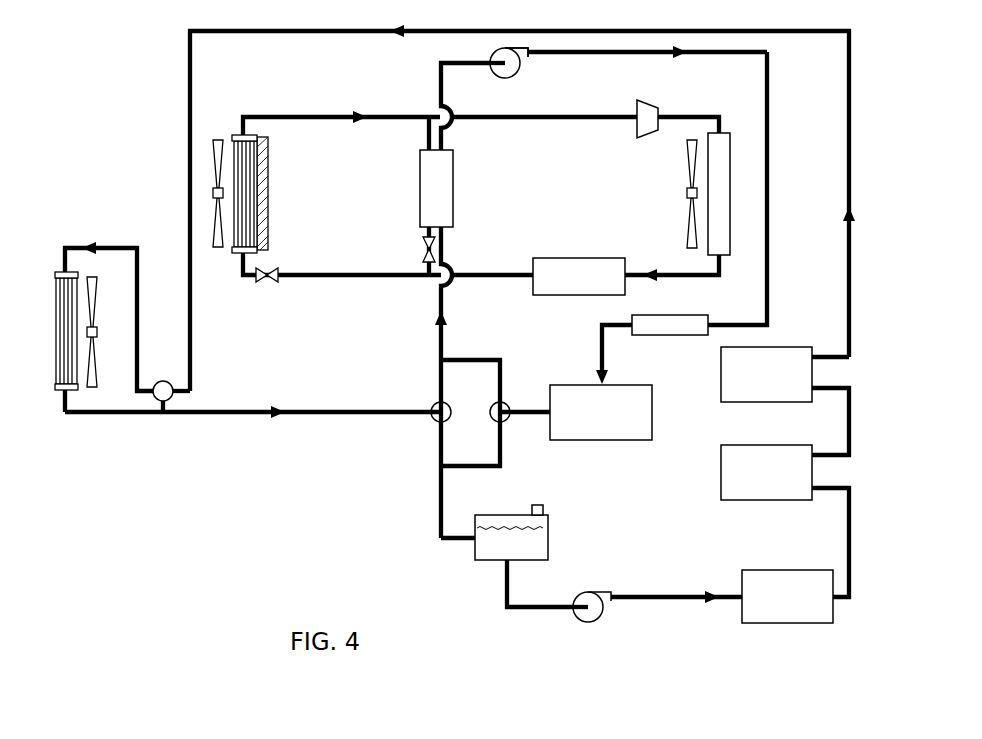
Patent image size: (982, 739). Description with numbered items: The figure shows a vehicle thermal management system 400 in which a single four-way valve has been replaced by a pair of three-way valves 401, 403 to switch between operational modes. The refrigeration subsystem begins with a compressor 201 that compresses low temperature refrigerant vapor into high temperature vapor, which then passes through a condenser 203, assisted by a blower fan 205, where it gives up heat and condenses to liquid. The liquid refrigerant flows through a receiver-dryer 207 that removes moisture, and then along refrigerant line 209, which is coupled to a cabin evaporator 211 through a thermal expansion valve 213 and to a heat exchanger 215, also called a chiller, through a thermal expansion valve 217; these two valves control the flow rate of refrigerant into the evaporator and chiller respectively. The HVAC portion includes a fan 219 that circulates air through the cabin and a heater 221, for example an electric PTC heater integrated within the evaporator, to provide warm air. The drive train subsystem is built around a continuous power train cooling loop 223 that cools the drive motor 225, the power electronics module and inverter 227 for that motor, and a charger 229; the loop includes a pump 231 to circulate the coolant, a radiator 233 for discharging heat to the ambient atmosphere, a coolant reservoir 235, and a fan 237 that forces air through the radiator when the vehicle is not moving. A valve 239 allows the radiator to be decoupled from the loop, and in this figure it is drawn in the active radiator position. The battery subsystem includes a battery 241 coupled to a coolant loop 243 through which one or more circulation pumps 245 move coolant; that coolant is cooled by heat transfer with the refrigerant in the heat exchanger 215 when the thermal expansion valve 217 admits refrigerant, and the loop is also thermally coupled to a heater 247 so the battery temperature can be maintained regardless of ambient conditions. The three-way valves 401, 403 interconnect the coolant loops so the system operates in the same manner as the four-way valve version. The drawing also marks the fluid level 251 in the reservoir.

The system 400 is at (270, 511).
The compressor 201 is at (653, 108).
The condenser 203 is at (728, 135).
The blower fan 205 is at (688, 148).
The receiver-dryer 207 is at (606, 258).
The refrigerant line 209 is at (470, 274).
The cabin evaporator 211 is at (255, 183).
The thermal expansion valve 213 is at (274, 284).
The heat exchanger 215 is at (448, 183).
The thermal expansion valve 217 is at (425, 252).
The fan 219 is at (212, 243).
The heater 221 is at (272, 142).
The power train cooling loop 223 is at (447, 31).
The drive motor 225 is at (736, 445).
The power electronics module and inverter 227 is at (778, 347).
The charger 229 is at (758, 570).
The pump 231 is at (583, 593).
The radiator 233 is at (56, 352).
The coolant reservoir 235 is at (549, 556).
The fan 237 is at (96, 282).
The valve 239 is at (172, 384).
The battery 241 is at (628, 385).
The coolant loop 243 is at (769, 185).
The circulation pump 245 is at (512, 75).
The heater 247 is at (675, 315).
The fluid level 251 is at (500, 522).
The three-way valve 401 is at (433, 404).
The three-way valve 403 is at (506, 420).